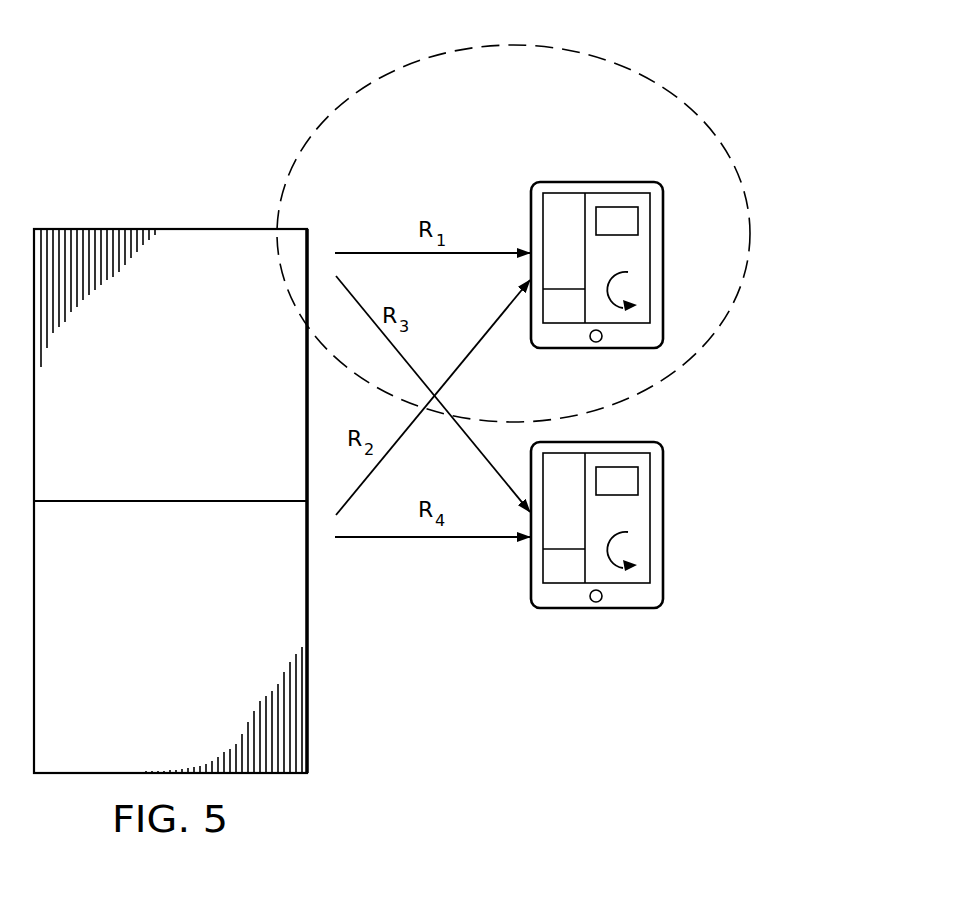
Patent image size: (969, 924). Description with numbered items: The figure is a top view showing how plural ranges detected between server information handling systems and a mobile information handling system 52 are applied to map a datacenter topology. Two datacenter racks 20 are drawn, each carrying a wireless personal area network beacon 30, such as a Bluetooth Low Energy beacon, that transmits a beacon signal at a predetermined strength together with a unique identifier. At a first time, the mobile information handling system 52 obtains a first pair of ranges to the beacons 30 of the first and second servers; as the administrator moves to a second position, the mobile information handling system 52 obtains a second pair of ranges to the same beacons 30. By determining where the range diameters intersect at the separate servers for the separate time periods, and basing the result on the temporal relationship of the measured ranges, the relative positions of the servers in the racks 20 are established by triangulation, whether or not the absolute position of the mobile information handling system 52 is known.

The datacenter rack 20 is at (155, 378).
The wireless personal area network beacon device 30 is at (325, 237).
The mobile information handling system 52 is at (597, 181).